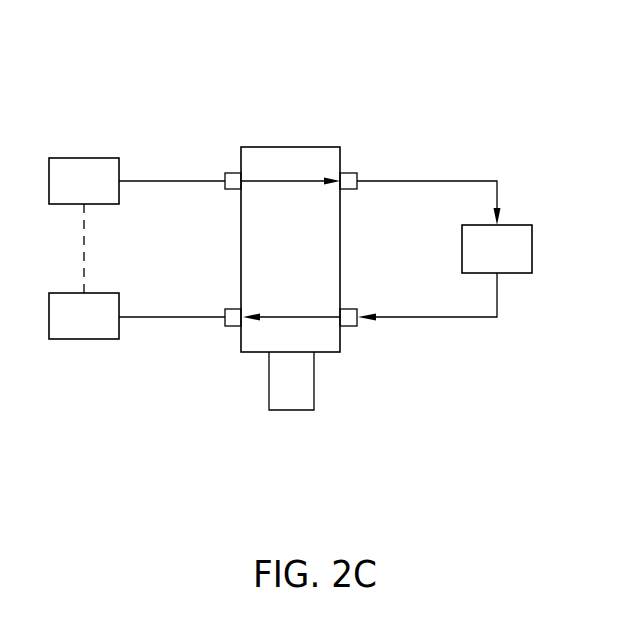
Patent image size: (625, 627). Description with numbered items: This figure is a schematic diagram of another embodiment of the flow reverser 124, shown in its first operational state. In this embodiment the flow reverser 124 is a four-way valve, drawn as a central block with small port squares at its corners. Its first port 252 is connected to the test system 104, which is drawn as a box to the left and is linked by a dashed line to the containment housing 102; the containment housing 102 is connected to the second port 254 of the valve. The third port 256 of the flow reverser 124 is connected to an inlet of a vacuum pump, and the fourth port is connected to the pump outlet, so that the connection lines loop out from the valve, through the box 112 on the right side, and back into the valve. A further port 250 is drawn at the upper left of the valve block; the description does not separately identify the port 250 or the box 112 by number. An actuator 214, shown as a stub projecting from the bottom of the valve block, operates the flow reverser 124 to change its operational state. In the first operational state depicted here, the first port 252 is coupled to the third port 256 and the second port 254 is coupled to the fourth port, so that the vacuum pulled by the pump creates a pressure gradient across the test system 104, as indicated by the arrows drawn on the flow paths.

The flow reverser 124 is at (292, 65).
The test system 104 is at (103, 191).
The containment housing 102 is at (103, 326).
The processing unit 112 is at (517, 259).
The first inlet port 250 is at (233, 172).
The second port 254 is at (347, 172).
The first port 252 is at (232, 327).
The third port 256 is at (348, 327).
The actuator 214 is at (295, 402).